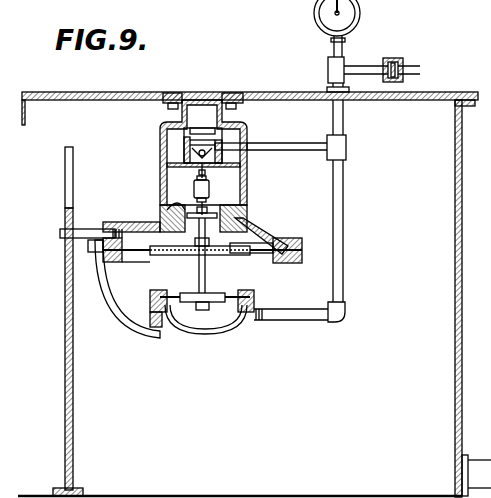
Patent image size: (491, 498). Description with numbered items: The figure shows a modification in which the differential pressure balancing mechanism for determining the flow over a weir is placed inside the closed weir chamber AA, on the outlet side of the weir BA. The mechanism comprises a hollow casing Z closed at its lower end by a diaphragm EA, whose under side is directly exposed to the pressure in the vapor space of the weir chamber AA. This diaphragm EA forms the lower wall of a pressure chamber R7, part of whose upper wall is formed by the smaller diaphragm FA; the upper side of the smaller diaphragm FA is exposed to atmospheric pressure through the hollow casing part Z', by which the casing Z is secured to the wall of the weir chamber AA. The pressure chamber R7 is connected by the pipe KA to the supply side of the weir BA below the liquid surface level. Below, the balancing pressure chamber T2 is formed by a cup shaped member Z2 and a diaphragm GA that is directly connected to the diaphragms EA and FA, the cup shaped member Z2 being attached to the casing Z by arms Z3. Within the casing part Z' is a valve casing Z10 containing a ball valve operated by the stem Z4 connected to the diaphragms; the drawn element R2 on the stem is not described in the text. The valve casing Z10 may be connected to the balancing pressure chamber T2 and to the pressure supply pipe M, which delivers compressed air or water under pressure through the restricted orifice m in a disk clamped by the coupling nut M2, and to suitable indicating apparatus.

The weir chamber AA is at (254, 294).
The weir BA is at (74, 382).
The pipe KA is at (84, 231).
The pressure supply pipe M is at (412, 67).
The coupling nut M2 is at (391, 58).
The restricted orifice m is at (386, 70).
The hollow casing part Z' is at (182, 162).
The valve casing Z10 is at (178, 143).
The stem Z4 is at (224, 173).
The weight / block R2 is at (217, 190).
The smaller diaphragm FA is at (178, 210).
The diaphragm EA is at (139, 253).
The hollow casing Z is at (261, 226).
The pressure chamber R7 is at (262, 243).
The arms Z3 is at (111, 310).
The diaphragm GA is at (172, 297).
The balancing pressure chamber T2 is at (215, 316).
The cup shaped member Z2 is at (199, 335).